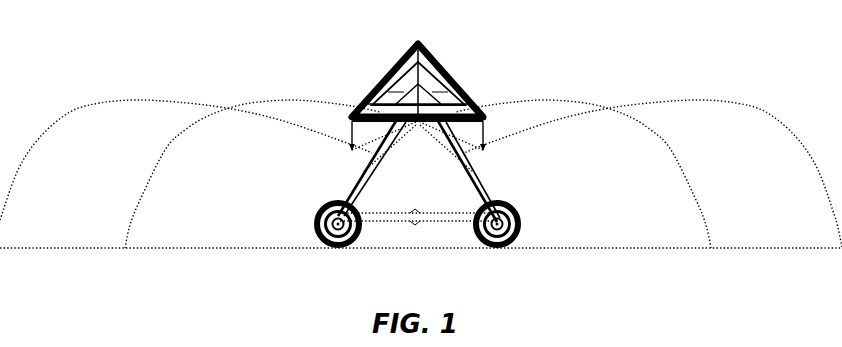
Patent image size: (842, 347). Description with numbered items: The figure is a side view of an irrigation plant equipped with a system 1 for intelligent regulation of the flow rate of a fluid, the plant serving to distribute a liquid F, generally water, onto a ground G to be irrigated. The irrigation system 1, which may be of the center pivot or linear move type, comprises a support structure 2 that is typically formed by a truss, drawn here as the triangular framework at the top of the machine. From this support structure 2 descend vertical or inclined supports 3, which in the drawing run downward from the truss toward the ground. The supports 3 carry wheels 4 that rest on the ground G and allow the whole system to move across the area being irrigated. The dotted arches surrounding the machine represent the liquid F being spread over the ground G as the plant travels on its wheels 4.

The irrigation system 1 is at (418, 130).
The support structure 2 is at (393, 82).
The supports 3 is at (473, 174).
The wheels 4 is at (318, 222).
The liquid F is at (128, 100).
The ground G is at (740, 248).